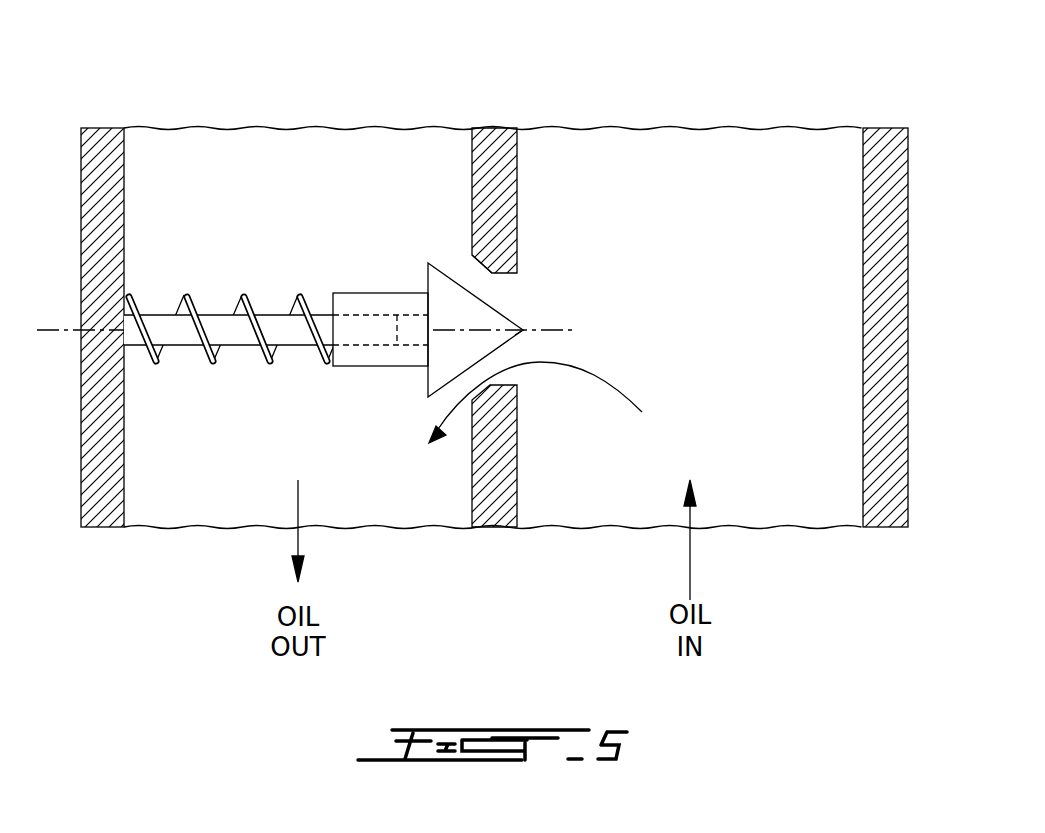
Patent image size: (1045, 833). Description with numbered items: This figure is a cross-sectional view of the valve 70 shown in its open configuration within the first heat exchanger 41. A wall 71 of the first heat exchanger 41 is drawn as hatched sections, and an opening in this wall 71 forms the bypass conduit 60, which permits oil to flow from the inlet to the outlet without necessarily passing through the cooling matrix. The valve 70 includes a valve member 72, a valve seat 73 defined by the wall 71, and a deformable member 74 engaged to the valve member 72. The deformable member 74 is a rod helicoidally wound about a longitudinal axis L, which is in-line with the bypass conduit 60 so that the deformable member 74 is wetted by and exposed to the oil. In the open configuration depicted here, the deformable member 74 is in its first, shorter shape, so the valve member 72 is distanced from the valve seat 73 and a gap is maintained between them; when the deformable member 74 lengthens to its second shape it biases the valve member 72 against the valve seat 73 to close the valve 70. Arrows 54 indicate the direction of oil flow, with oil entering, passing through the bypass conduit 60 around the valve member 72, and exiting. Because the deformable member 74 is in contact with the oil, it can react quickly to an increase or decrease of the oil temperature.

The first heat exchanger 41 is at (815, 117).
The valve 70 is at (185, 492).
The wall 71 is at (518, 196).
The valve member 72 is at (512, 338).
The valve seat 73 is at (478, 269).
The deformable member 74 is at (245, 294).
The bypass conduit 60 is at (515, 308).
The arrows indicating direction of oil flow 54 is at (593, 375).
The longitudinal axis L is at (54, 328).